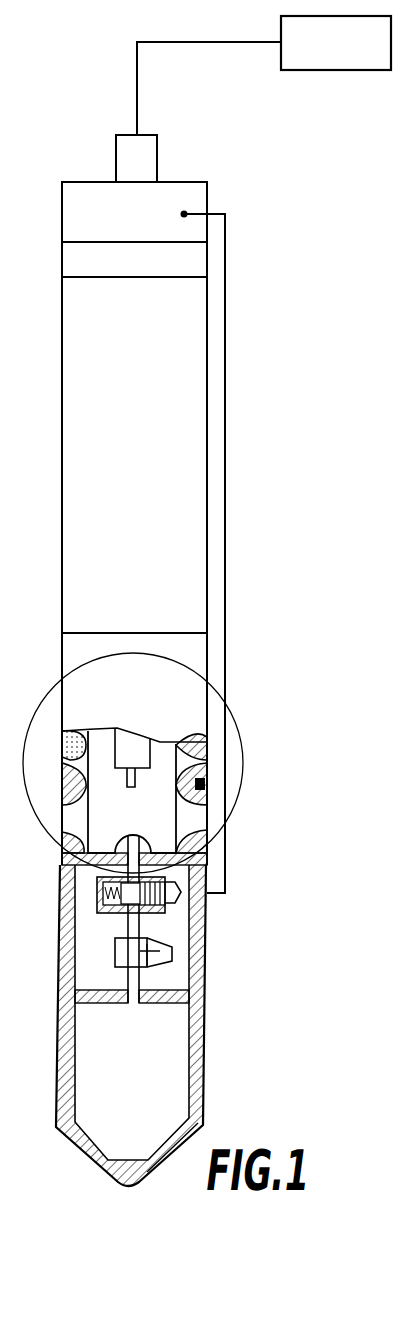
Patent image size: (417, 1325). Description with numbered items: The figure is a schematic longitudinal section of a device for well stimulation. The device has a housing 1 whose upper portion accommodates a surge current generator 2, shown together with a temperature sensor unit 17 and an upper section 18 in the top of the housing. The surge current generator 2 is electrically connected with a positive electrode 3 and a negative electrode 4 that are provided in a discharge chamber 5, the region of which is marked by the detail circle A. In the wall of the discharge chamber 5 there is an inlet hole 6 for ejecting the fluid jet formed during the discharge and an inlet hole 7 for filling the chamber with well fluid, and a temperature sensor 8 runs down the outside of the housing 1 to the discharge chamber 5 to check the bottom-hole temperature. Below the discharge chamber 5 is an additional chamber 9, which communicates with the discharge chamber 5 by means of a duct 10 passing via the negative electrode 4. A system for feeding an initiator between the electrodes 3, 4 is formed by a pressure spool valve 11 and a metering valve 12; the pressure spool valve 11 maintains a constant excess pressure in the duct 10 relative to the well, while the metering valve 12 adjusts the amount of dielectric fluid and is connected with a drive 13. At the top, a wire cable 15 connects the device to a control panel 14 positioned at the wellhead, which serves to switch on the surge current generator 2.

The housing 1 is at (70, 649).
The surge current generator 2 is at (68, 554).
The positive electrode 3 is at (134, 787).
The negative electrode 4 is at (147, 846).
The discharge chamber 5 is at (170, 826).
The inlet hole 6 is at (77, 815).
The inlet hole 7 is at (68, 732).
The temperature sensor 8 is at (207, 775).
The additional chamber 9 is at (180, 1055).
The duct 10 is at (121, 923).
The pressure spool valve 11 is at (150, 952).
The metering valve 12 is at (115, 912).
The drive 13 is at (182, 896).
The control panel 14 is at (368, 62).
The wire cable 15 is at (224, 42).
The temperature sensor unit 17 is at (77, 262).
The upper top section 18 is at (72, 210).
The detail circle A is at (262, 748).